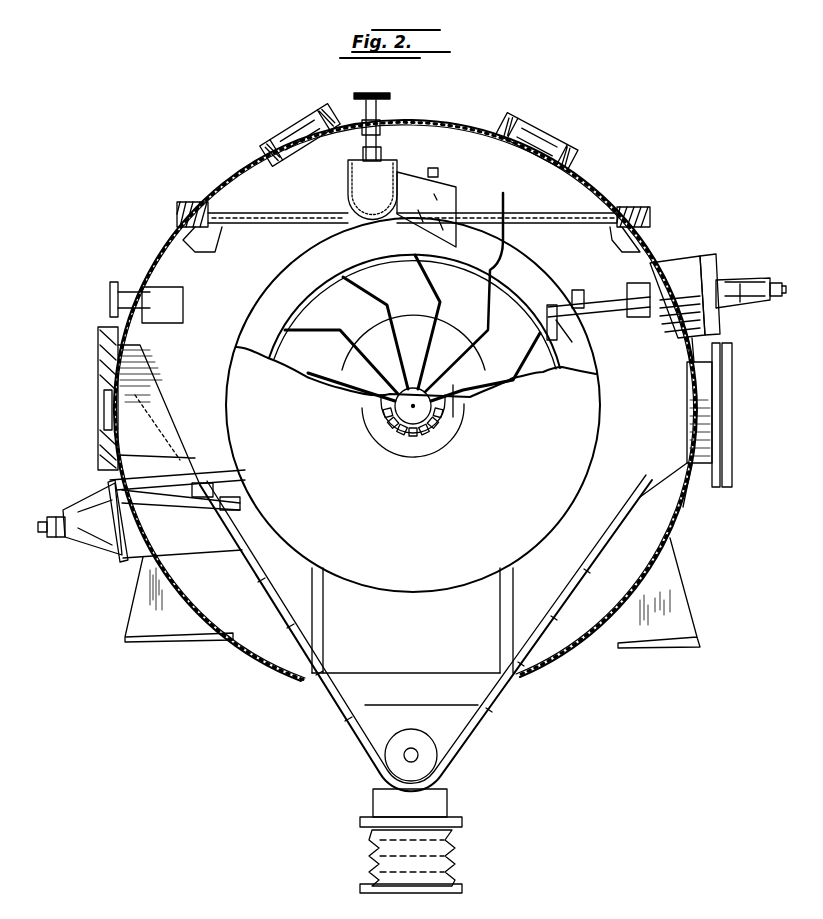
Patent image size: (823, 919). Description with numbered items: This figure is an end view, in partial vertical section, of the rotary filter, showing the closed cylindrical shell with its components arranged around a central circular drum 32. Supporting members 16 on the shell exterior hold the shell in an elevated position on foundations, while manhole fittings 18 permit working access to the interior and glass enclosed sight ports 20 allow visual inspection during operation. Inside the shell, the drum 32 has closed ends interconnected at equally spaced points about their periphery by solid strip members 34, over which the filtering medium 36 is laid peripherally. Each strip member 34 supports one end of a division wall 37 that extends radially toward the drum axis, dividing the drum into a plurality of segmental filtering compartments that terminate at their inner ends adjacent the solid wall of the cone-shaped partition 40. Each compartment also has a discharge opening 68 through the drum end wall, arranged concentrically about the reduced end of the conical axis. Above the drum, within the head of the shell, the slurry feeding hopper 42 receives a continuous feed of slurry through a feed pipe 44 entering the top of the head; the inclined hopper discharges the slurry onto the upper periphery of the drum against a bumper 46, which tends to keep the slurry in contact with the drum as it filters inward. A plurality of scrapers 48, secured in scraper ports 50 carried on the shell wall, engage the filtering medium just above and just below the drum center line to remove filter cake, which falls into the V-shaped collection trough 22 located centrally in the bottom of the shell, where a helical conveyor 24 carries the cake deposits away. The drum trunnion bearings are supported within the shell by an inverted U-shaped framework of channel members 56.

The supporting members 16 is at (672, 580).
The manhole fittings 18 is at (104, 452).
The sight ports 20 is at (268, 138).
The collection trough 22 is at (488, 720).
The helical conveyor 24 is at (428, 762).
The circular drum 32 is at (576, 486).
The solid strip members 34 is at (413, 257).
The filtering medium 36 is at (320, 290).
The division wall 37 is at (441, 316).
The cone-shaped partition 40 is at (452, 412).
The slurry feeding hopper 42 is at (404, 180).
The feed pipe 44 is at (390, 106).
The bumper 46 is at (512, 235).
The scrapers 48 is at (608, 317).
The scraper ports 50 is at (708, 265).
The channel members 56 is at (513, 590).
The discharge opening 68 is at (392, 430).